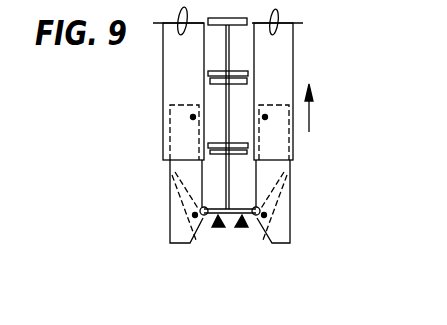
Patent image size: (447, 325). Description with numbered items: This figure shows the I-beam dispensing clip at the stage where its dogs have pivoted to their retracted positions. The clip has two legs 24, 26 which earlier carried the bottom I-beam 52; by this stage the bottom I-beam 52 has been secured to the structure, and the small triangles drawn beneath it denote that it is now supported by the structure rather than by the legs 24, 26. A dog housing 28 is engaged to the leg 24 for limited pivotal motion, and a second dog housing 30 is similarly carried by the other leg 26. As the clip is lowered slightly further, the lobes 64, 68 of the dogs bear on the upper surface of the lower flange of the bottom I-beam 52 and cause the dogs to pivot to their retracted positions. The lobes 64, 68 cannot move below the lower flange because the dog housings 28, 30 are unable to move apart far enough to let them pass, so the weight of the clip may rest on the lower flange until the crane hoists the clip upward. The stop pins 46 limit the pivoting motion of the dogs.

The leg 24 is at (281, 66).
The leg 26 is at (187, 72).
The dog housing 28 is at (293, 190).
The dog housing 30 is at (169, 184).
The stop pin 46 is at (184, 206).
The bottom I-beam 52 is at (230, 215).
The lobe 64 is at (257, 216).
The lobe 68 is at (202, 216).